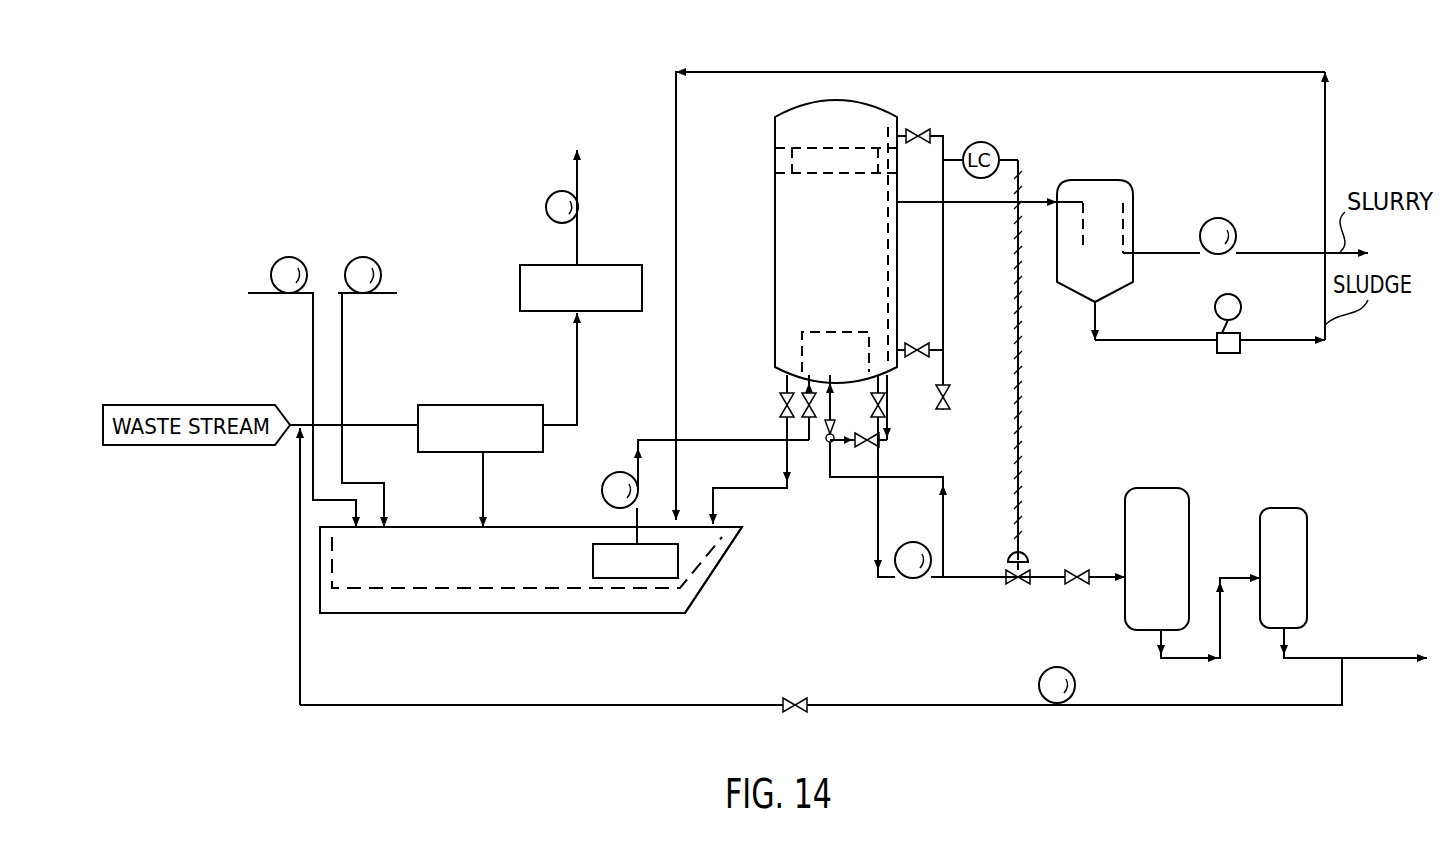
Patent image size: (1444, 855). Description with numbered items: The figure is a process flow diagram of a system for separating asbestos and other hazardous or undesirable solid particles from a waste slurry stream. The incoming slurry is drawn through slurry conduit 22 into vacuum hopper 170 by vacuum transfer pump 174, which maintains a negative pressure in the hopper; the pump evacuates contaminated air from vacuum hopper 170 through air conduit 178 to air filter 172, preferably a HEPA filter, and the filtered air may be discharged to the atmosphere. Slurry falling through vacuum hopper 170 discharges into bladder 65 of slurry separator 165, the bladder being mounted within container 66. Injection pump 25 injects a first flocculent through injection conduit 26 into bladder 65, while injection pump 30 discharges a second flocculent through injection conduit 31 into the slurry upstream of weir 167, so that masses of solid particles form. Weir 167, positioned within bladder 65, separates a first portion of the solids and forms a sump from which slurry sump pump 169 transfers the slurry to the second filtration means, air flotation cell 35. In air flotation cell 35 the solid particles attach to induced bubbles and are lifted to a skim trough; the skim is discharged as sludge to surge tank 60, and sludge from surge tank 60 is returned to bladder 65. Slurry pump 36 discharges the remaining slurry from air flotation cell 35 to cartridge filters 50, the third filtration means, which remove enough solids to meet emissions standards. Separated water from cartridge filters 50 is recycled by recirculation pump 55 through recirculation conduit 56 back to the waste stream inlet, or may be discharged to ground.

The slurry conduit 22 is at (483, 475).
The injection pump 25 is at (289, 257).
The injection conduit 26 is at (313, 350).
The injection pump 30 is at (363, 257).
The injection conduit 31 is at (342, 350).
The air flotation cell 35 is at (787, 257).
The slurry pump 36 is at (913, 578).
The cartridge filter 50 is at (1160, 495).
The recirculation pump 55 is at (1055, 667).
The recirculation conduit 56 is at (847, 702).
The surge tank 60 is at (1110, 190).
The bladder 65 is at (483, 565).
The container 66 is at (350, 612).
The slurry separator 165 is at (718, 578).
The weir 167 is at (630, 560).
The slurry sump pump 169 is at (620, 472).
The vacuum hopper 170 is at (500, 441).
The air filter 172 is at (600, 301).
The vacuum transfer pump 174 is at (545, 215).
The air conduit 178 is at (577, 365).